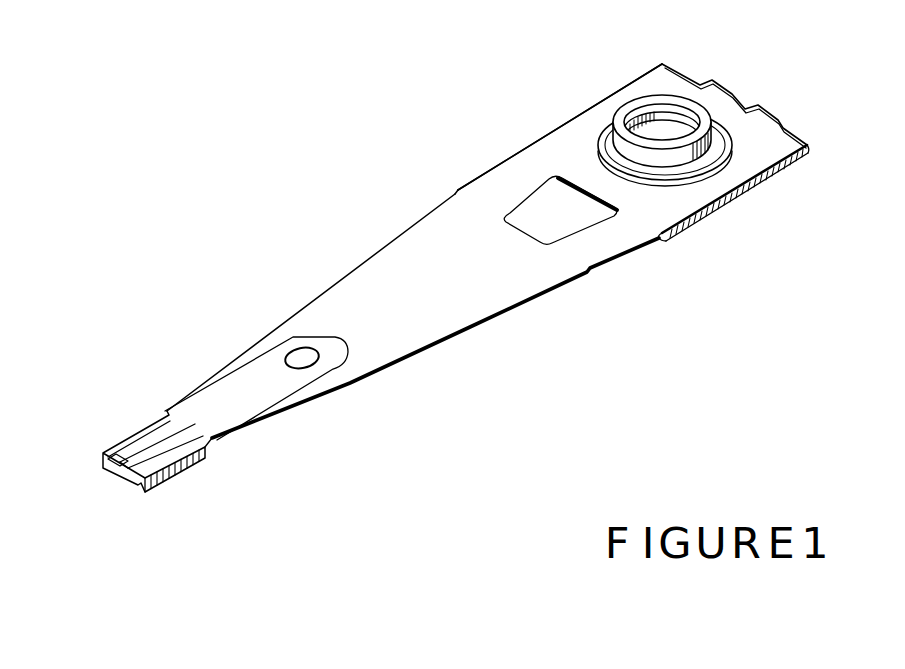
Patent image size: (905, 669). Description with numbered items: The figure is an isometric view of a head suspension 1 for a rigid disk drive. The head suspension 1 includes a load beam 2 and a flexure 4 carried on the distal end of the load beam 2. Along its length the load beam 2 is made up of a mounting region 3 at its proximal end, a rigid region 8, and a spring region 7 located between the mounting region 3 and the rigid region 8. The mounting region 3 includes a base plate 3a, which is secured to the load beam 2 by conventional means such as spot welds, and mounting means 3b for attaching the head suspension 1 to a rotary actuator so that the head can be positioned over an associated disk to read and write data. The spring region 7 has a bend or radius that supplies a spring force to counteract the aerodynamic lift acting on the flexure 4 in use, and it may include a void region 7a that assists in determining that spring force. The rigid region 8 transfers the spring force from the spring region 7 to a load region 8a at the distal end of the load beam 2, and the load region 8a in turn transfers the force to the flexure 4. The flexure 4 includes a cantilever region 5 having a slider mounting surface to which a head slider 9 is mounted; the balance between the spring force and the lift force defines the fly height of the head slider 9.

The head suspension 1 is at (607, 77).
The load beam 2 is at (480, 308).
The mounting region 3 is at (687, 202).
The base plate 3a is at (808, 157).
The mounting means 3b is at (713, 132).
The flexure 4 is at (267, 392).
The cantilever region 5 is at (127, 465).
The spring region 7 is at (528, 173).
The void region 7a is at (573, 217).
The rigid region 8 is at (362, 283).
The load region 8a is at (162, 445).
The head slider 9 is at (182, 475).